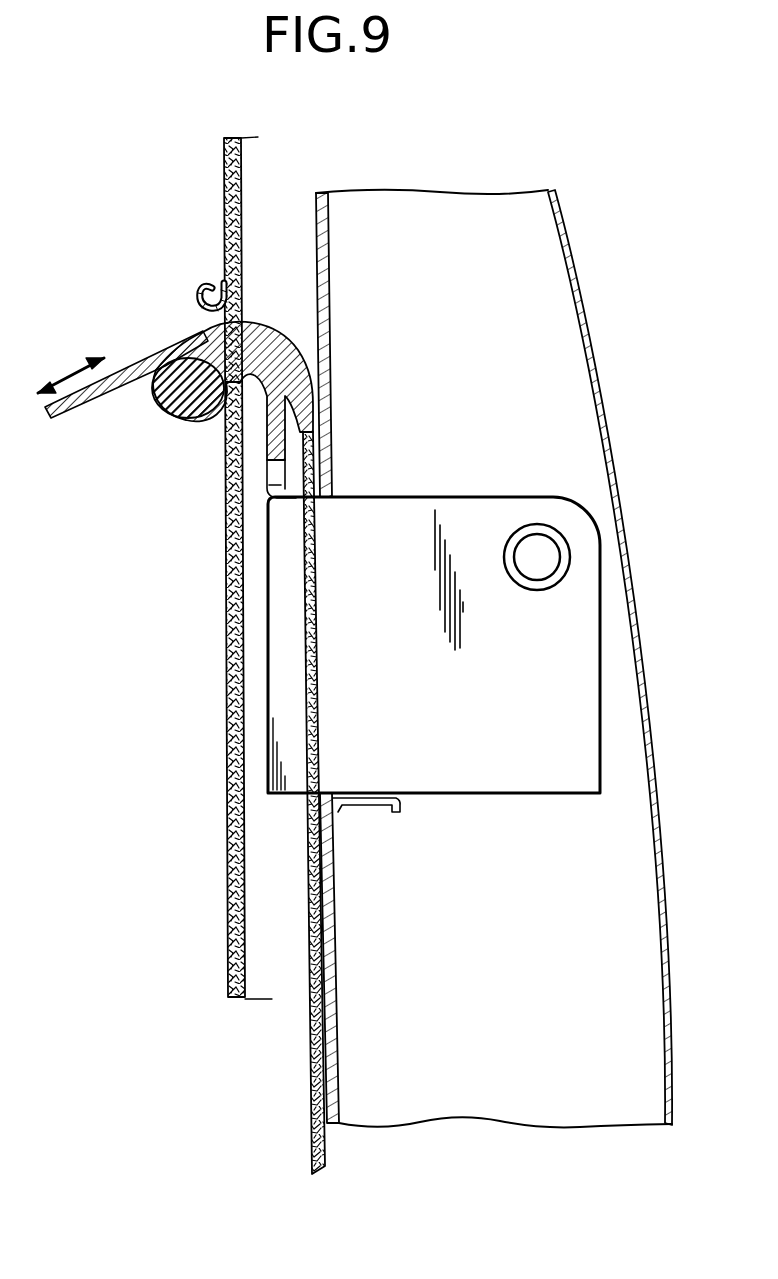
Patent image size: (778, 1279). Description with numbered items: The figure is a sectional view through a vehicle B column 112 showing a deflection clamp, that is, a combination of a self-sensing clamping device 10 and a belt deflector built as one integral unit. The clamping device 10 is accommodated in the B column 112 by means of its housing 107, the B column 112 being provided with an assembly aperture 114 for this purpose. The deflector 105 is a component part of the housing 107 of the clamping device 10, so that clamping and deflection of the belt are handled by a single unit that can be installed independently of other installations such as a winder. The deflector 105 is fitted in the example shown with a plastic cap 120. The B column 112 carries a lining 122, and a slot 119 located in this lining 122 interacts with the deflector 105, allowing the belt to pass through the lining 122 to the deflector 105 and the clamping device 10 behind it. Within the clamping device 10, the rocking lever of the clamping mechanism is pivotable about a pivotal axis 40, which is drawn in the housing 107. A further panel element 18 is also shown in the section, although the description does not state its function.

The clamping device 10 is at (193, 568).
The inner panel 18 is at (313, 1105).
The pivotal axis 40 is at (537, 563).
The deflector 105 is at (265, 398).
The housing 107 is at (434, 667).
The B column 112 is at (494, 685).
The assembly aperture 114 is at (318, 498).
The slot 119 is at (240, 310).
The plastic cap 120 is at (160, 410).
The lining 122 is at (225, 818).